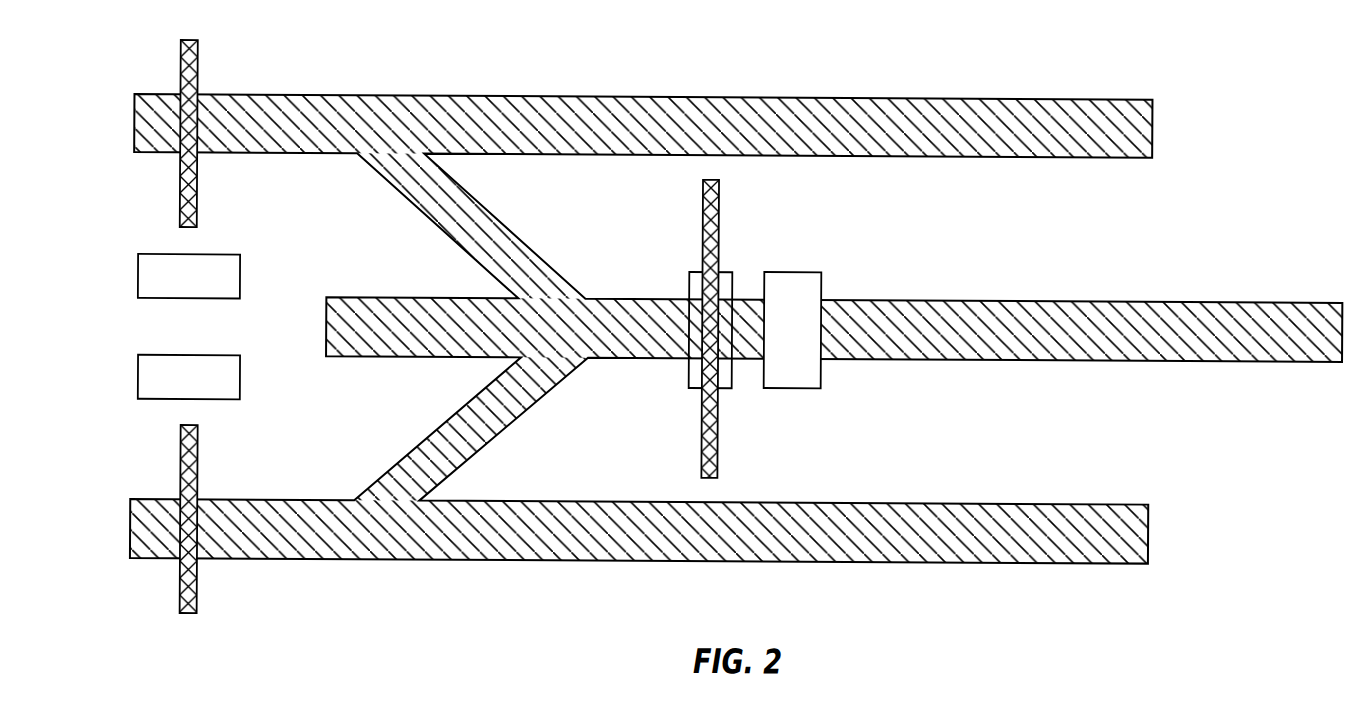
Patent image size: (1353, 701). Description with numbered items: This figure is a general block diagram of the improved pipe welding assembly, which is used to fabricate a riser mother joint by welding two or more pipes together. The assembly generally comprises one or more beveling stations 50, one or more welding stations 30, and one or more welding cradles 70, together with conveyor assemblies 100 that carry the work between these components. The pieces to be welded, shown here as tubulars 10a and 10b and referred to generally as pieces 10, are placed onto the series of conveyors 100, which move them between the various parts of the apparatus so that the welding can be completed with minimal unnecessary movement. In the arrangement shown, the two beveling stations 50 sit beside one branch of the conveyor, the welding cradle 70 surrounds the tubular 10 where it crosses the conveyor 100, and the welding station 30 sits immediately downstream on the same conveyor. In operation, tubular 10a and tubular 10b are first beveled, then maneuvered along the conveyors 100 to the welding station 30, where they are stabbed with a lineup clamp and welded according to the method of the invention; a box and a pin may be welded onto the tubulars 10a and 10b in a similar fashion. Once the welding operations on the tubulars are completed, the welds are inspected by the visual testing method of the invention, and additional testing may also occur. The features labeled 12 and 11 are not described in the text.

The conveyor assemblies 100 is at (868, 93).
The tubular 10a is at (198, 67).
The tubular 10b is at (200, 576).
The pieces 10 is at (720, 226).
The beveling station 50 is at (140, 272).
The welding cradle 70 is at (734, 384).
The welding station 30 is at (824, 372).
The fiber cladding 12 is at (704, 304).
The fiber core 11 is at (707, 341).